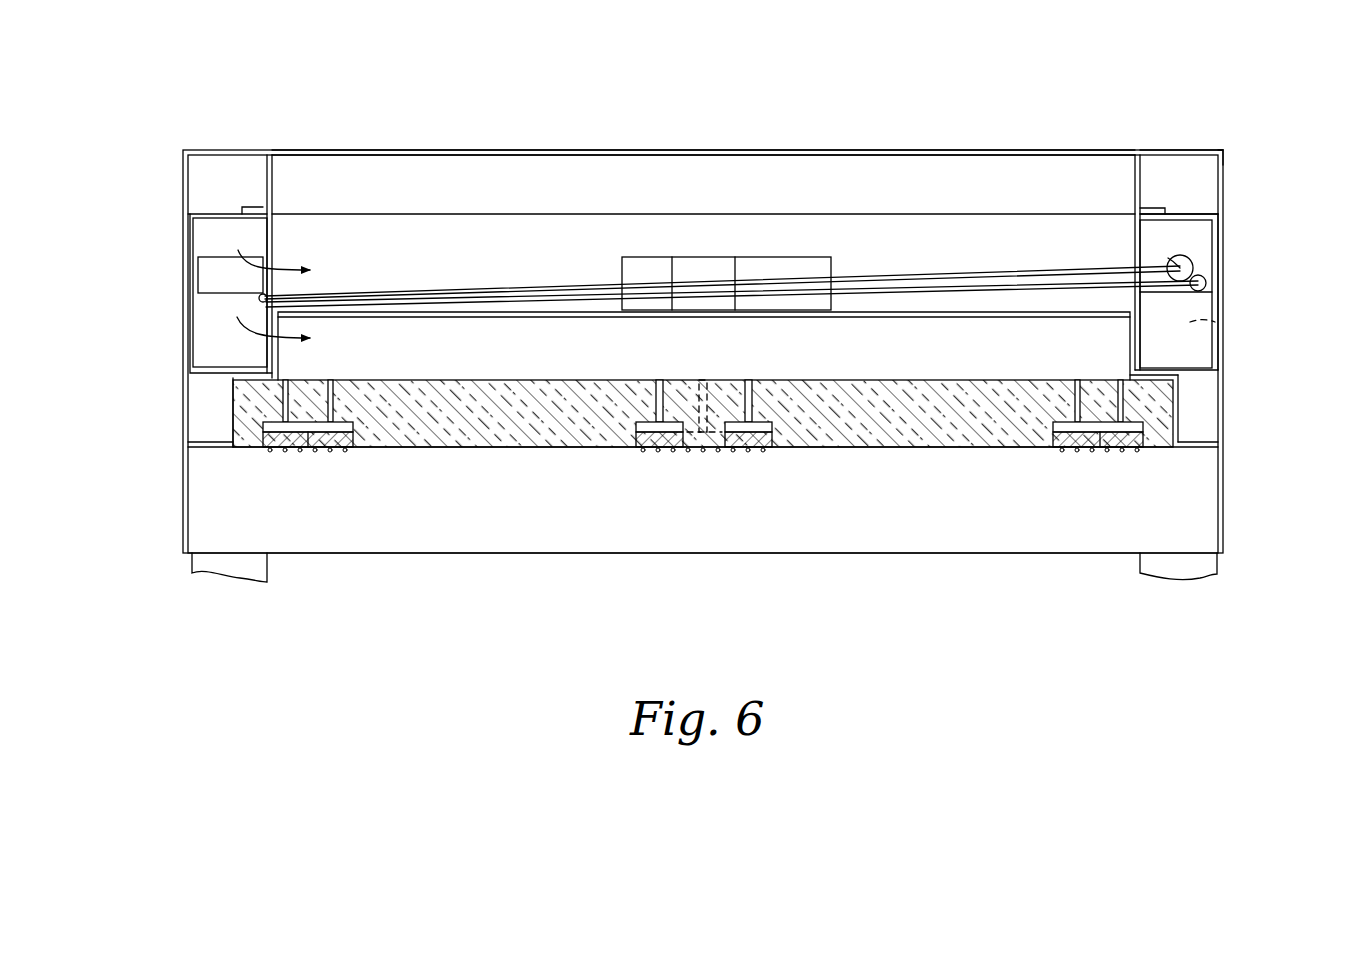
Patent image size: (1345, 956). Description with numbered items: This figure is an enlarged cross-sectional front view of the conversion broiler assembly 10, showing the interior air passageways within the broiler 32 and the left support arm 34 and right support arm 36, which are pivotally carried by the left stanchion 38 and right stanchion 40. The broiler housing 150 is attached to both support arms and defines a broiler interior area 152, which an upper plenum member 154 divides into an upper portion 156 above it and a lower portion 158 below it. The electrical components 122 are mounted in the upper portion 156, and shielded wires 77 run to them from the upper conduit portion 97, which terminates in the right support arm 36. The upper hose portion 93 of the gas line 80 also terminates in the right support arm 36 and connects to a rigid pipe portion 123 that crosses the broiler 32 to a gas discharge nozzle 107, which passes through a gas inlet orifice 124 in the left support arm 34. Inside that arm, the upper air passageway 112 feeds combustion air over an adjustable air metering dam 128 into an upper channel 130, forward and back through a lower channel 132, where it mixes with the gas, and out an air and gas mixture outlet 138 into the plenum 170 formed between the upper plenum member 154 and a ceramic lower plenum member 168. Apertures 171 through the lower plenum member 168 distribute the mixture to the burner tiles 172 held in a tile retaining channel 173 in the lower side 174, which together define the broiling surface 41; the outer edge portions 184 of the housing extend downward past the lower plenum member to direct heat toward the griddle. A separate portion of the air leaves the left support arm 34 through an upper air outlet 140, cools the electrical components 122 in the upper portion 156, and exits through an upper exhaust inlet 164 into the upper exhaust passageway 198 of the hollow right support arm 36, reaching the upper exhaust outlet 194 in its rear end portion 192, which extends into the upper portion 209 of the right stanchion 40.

The conversion broiler assembly 10 is at (1030, 72).
The broiler 32 is at (848, 172).
The left support arm 34 is at (215, 213).
The right support arm 36 is at (1200, 213).
The left stanchion 38 is at (218, 563).
The right stanchion 40 is at (1185, 152).
The broiling surface 41 is at (1080, 452).
The shielded wires 77 is at (972, 290).
The gas line 80 is at (1197, 256).
The upper hose portion 93 is at (1168, 258).
The upper conduit portion 97 is at (1207, 280).
The gas discharge nozzle 107 is at (259, 301).
The upper air passageway 112 is at (218, 233).
The electrical components 122 is at (635, 257).
The rigid pipe portion 123 is at (913, 277).
The gas inlet orifice 124 is at (261, 297).
The adjustable air metering dam 128 is at (205, 270).
The upper channel 130 is at (200, 248).
The lower channel 132 is at (213, 353).
The air and gas mixture outlet 138 is at (282, 322).
The upper air outlet 140 is at (265, 227).
The broiler housing 150 is at (465, 150).
The broiler interior area 152 is at (398, 183).
The upper plenum member 154 is at (842, 313).
The upper portion 156 is at (548, 225).
The lower portion 158 is at (467, 330).
The upper exhaust inlet 164 is at (1135, 230).
The lower plenum member 168 is at (400, 432).
The plenum 170 is at (538, 350).
The apertures 171 is at (748, 395).
The burner tiles 172 is at (653, 437).
The tile retaining channel 173 is at (285, 448).
The lower side 174 is at (900, 432).
The outer edge portions 184 is at (1223, 478).
The rear end portion 192 is at (1223, 305).
The upper exhaust outlet 194 is at (1215, 322).
The upper exhaust passageway 198 is at (1155, 233).
The upper portion 209 is at (1223, 160).